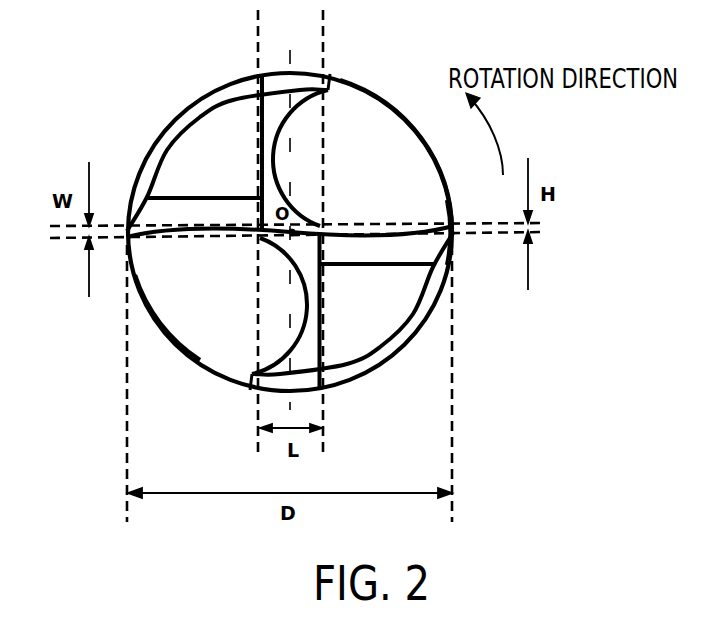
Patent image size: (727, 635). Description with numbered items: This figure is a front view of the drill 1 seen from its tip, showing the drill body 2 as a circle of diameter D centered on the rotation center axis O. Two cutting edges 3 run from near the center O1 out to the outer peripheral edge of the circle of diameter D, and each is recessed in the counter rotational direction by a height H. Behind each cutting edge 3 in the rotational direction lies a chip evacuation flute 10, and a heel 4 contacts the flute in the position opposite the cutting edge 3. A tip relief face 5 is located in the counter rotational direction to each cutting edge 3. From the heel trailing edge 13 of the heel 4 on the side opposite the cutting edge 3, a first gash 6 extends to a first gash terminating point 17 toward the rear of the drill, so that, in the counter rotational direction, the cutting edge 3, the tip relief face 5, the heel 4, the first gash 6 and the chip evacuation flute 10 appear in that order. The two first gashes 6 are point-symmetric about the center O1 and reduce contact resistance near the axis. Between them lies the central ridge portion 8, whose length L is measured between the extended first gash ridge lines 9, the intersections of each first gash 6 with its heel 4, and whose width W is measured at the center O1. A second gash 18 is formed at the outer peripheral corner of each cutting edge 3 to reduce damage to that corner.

The drill 1 is at (147, 101).
The drill body 2 is at (389, 110).
The cutting edge 3 is at (158, 236).
The heel 4 is at (203, 173).
The tip relief face 5 is at (177, 212).
The first gash 6 is at (279, 92).
The central ridge portion 8 is at (280, 250).
The first gash ridge line 9 is at (258, 142).
The chip evacuation flute 10 is at (383, 184).
The heel trailing edge 13 is at (268, 115).
The first gash terminating point 17 is at (330, 75).
The second gash 18 is at (455, 222).